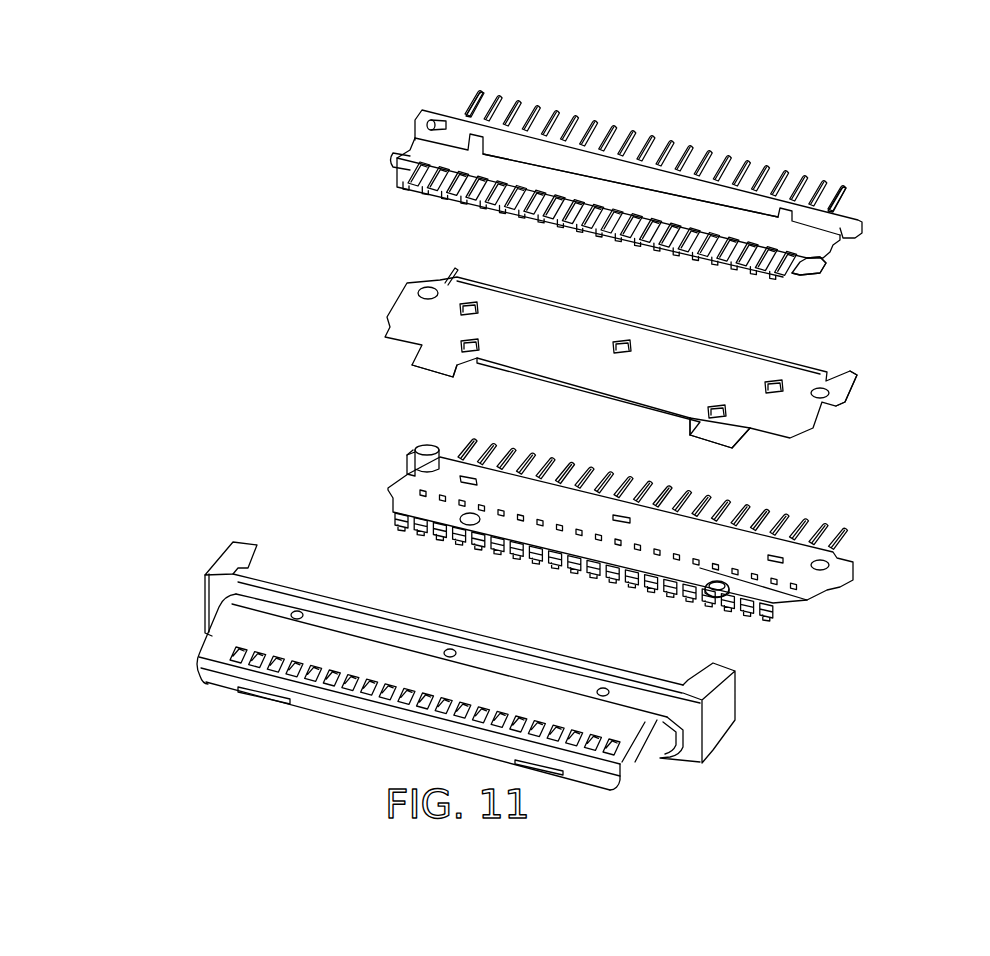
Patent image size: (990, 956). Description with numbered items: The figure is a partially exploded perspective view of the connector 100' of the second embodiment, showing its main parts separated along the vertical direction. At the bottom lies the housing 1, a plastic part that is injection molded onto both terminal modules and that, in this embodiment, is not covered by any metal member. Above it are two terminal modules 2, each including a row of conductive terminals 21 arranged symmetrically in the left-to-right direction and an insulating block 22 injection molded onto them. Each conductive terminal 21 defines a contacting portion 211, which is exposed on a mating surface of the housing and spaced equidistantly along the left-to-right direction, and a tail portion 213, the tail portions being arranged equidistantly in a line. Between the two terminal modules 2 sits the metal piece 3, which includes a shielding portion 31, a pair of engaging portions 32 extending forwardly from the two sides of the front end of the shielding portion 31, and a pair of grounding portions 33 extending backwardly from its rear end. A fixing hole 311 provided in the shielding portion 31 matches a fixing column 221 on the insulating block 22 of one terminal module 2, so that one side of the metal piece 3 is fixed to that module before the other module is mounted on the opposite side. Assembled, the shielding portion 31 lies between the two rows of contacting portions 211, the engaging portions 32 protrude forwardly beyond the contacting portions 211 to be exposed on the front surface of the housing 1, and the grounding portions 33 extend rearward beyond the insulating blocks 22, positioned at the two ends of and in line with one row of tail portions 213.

The connector 100' is at (506, 411).
The housing 1 is at (186, 580).
The terminal module 2 is at (391, 112).
The conductive terminal 21 is at (468, 103).
The insulating block 22 is at (533, 150).
The contacting portion 211 is at (792, 273).
The tail portion 213 is at (847, 190).
The fixing column 221 is at (427, 448).
The metal piece 3 is at (380, 291).
The shielding portion 31 is at (503, 327).
The engaging portion 32 is at (433, 358).
The grounding portion 33 is at (857, 377).
The fixing hole 311 is at (755, 430).